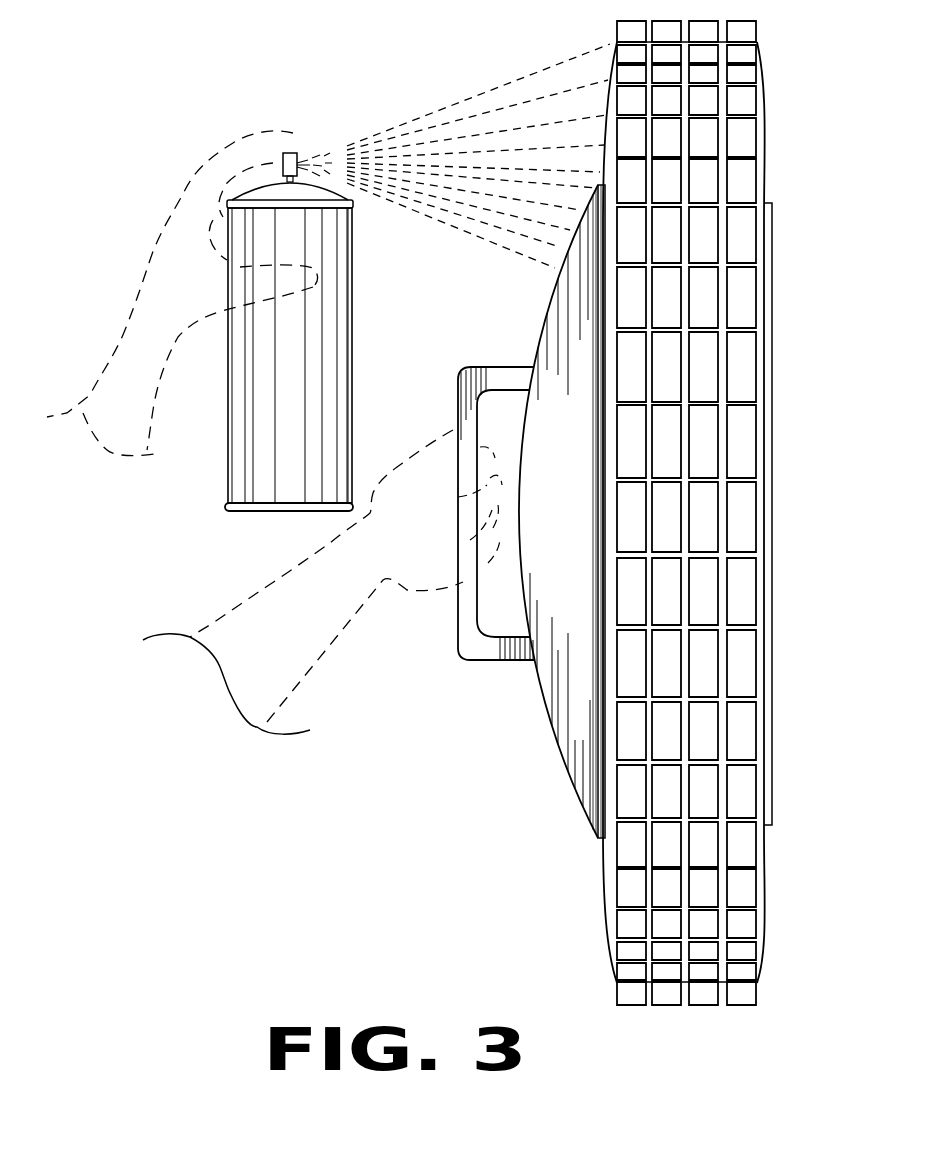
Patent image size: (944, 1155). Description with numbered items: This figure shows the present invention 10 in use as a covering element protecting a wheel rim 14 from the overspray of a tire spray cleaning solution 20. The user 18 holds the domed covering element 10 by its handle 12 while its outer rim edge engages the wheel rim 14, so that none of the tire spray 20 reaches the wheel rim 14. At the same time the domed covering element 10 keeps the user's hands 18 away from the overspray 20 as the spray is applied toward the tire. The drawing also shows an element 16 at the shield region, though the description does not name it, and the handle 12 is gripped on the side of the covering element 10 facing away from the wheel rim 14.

The covering element 10 is at (479, 546).
The handle 12 is at (467, 657).
The wheel rim 14 is at (772, 713).
The shield 16 is at (617, 853).
The user's hands 18 is at (100, 397).
The tire spray cleaning solution 20 is at (372, 122).